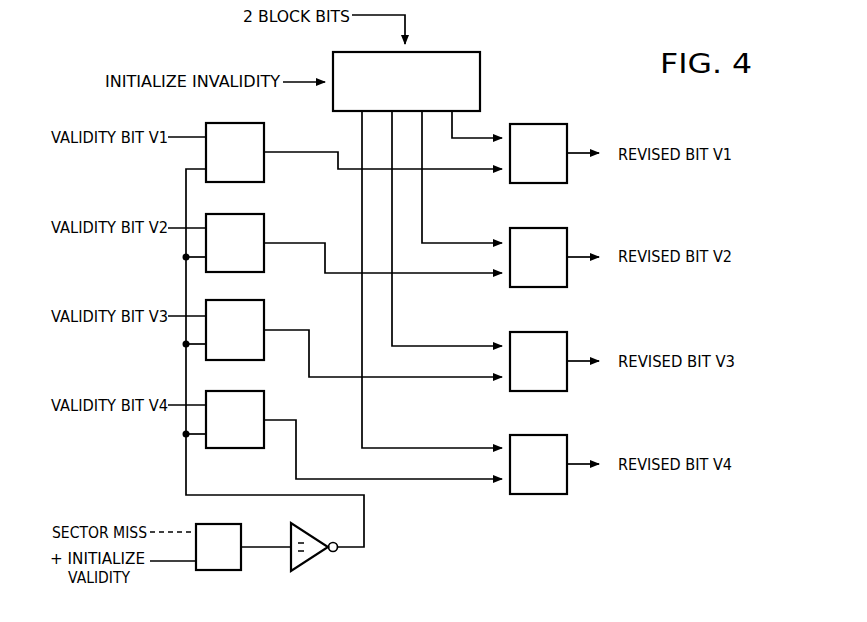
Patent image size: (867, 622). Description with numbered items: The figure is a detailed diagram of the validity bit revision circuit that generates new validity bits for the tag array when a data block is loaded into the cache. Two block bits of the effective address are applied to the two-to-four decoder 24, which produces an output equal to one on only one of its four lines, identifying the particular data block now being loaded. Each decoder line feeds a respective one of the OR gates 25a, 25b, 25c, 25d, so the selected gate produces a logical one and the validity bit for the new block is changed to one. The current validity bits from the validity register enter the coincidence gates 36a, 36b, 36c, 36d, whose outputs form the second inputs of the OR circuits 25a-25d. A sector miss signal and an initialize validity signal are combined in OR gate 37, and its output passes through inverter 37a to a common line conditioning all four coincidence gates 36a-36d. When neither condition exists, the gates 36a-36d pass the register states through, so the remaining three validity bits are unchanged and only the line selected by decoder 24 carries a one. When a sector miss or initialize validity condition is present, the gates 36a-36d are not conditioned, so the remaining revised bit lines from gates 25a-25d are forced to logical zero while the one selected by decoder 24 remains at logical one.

The decoder 24 is at (447, 52).
The coincidence gate 36a is at (235, 123).
The coincidence gate 36b is at (262, 214).
The coincidence gate 36c is at (262, 300).
The coincidence gate 36d is at (262, 391).
The OR gate 25a is at (541, 124).
The OR gate 25b is at (541, 228).
The OR gate 25c is at (537, 332).
The OR gate 25d is at (540, 435).
The OR gate 37 is at (235, 524).
The inverter 37a is at (300, 531).